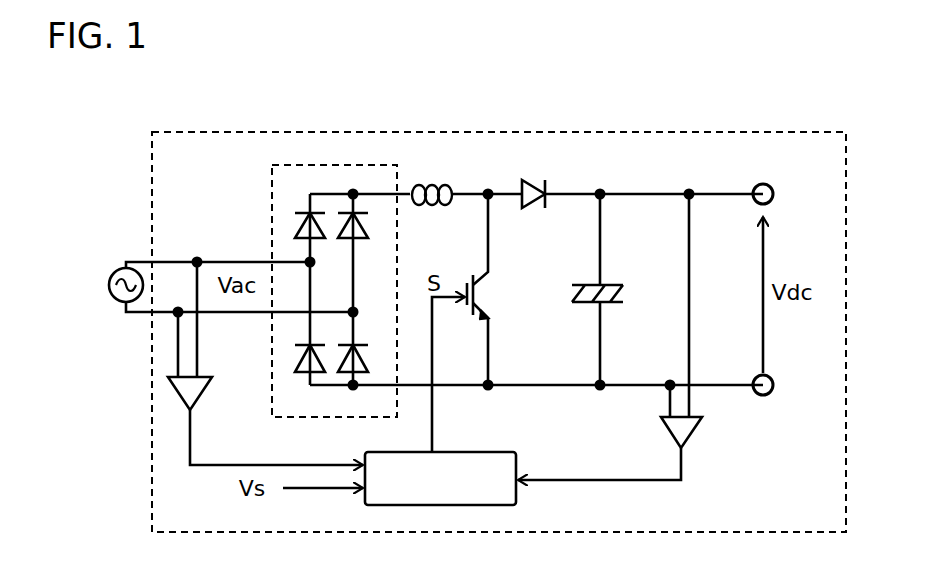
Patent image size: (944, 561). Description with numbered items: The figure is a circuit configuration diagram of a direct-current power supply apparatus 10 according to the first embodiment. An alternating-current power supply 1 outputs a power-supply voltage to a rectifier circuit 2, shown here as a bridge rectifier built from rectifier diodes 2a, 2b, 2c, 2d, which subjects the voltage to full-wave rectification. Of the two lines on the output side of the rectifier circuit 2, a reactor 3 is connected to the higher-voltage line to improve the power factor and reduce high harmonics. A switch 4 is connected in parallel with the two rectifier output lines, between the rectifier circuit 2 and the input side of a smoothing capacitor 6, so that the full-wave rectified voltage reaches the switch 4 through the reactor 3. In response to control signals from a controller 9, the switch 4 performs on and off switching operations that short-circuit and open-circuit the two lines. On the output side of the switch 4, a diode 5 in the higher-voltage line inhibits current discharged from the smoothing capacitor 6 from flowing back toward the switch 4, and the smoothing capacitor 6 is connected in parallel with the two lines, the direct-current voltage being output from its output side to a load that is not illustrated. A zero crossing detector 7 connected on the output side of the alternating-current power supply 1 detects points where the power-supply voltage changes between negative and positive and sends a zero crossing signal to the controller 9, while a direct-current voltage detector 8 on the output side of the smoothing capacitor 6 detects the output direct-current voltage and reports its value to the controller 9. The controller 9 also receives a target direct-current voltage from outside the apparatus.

The alternating-current power supply 1 is at (113, 270).
The rectifier circuit 2 is at (272, 220).
The rectifier diode 2a is at (300, 212).
The rectifier diode 2b is at (357, 240).
The rectifier diode 2c is at (303, 372).
The rectifier diode 2d is at (358, 345).
The reactor 3 is at (430, 184).
The switch 4 is at (480, 293).
The diode 5 is at (538, 180).
The smoothing capacitor 6 is at (605, 284).
The zero crossing detector 7 is at (204, 388).
The direct-current voltage detector 8 is at (694, 428).
The controller 9 is at (486, 452).
The direct-current power supply apparatus 10 is at (662, 114).